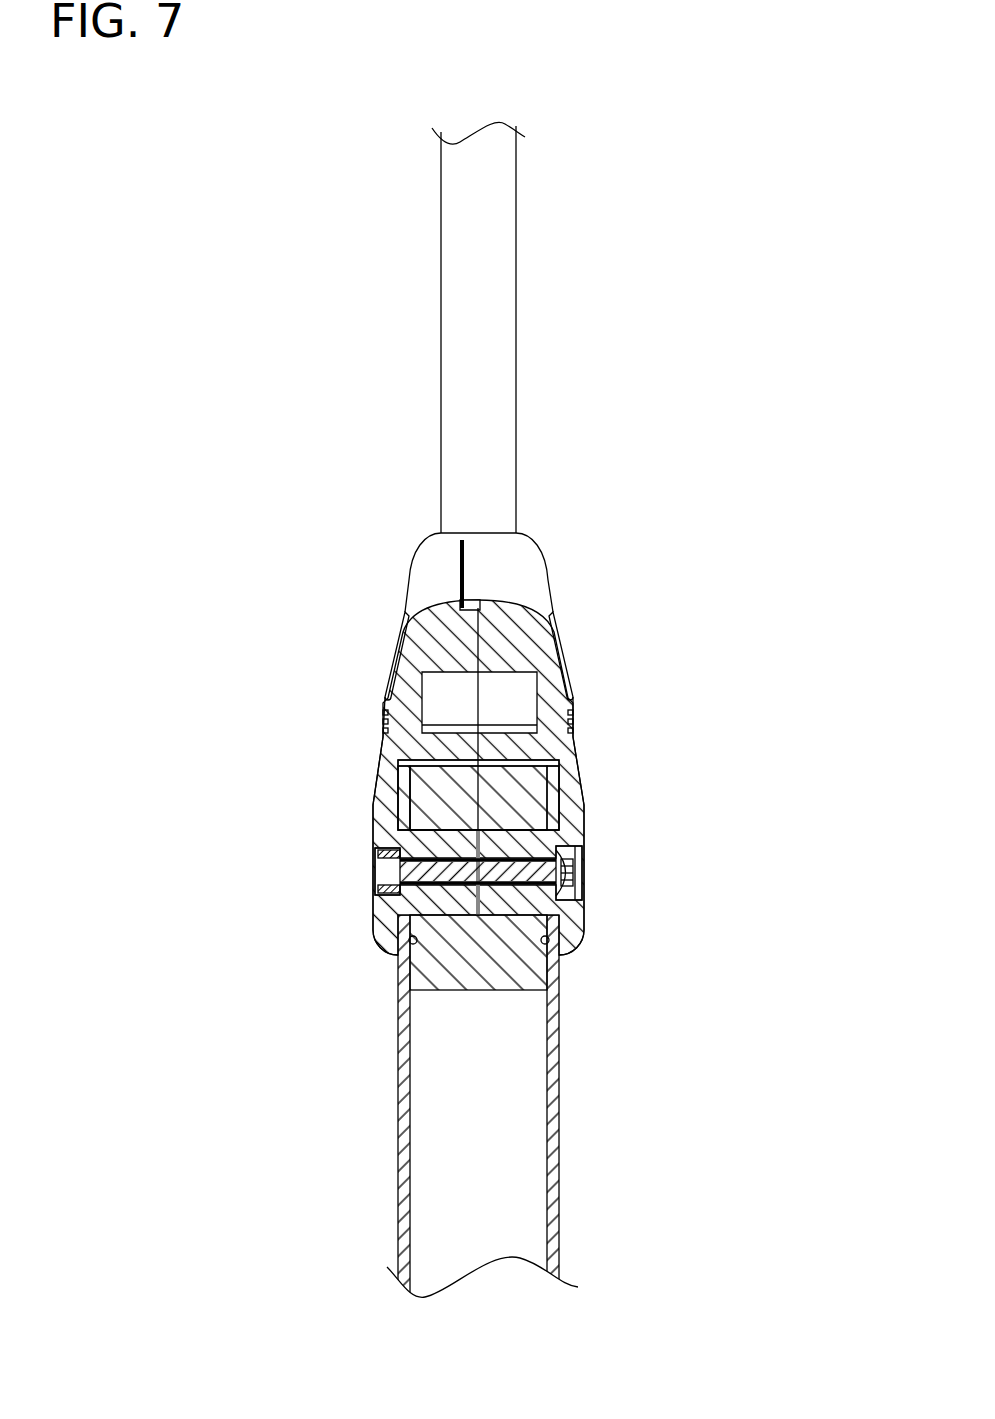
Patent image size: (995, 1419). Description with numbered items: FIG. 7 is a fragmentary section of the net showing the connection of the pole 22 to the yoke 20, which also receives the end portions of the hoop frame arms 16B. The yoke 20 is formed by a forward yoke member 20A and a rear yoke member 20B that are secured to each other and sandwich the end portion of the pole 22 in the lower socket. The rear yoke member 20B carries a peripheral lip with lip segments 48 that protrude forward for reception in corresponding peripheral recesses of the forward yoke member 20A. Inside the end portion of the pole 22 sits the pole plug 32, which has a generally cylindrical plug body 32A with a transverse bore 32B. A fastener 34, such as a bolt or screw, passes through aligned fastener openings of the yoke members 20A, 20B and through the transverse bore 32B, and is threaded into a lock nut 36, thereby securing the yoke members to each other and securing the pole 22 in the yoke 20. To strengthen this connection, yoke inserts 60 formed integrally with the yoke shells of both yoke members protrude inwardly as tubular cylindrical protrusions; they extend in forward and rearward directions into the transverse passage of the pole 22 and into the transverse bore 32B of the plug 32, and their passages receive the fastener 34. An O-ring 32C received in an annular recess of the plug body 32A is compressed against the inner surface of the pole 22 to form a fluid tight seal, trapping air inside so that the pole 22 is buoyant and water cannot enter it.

The hoop frame arm 16B is at (516, 303).
The yoke 20 is at (713, 470).
The forward yoke member 20A is at (412, 562).
The rear yoke member 20B is at (527, 545).
The lip segment 48 is at (470, 563).
The pole plug 32 is at (548, 792).
The plug body 32A is at (428, 788).
The transverse bore 32B is at (443, 833).
The lock nut 36 is at (378, 847).
The fastener 34 is at (553, 871).
The yoke insert 60 is at (412, 933).
The O-ring 32C is at (420, 950).
The pole 22 is at (560, 1125).